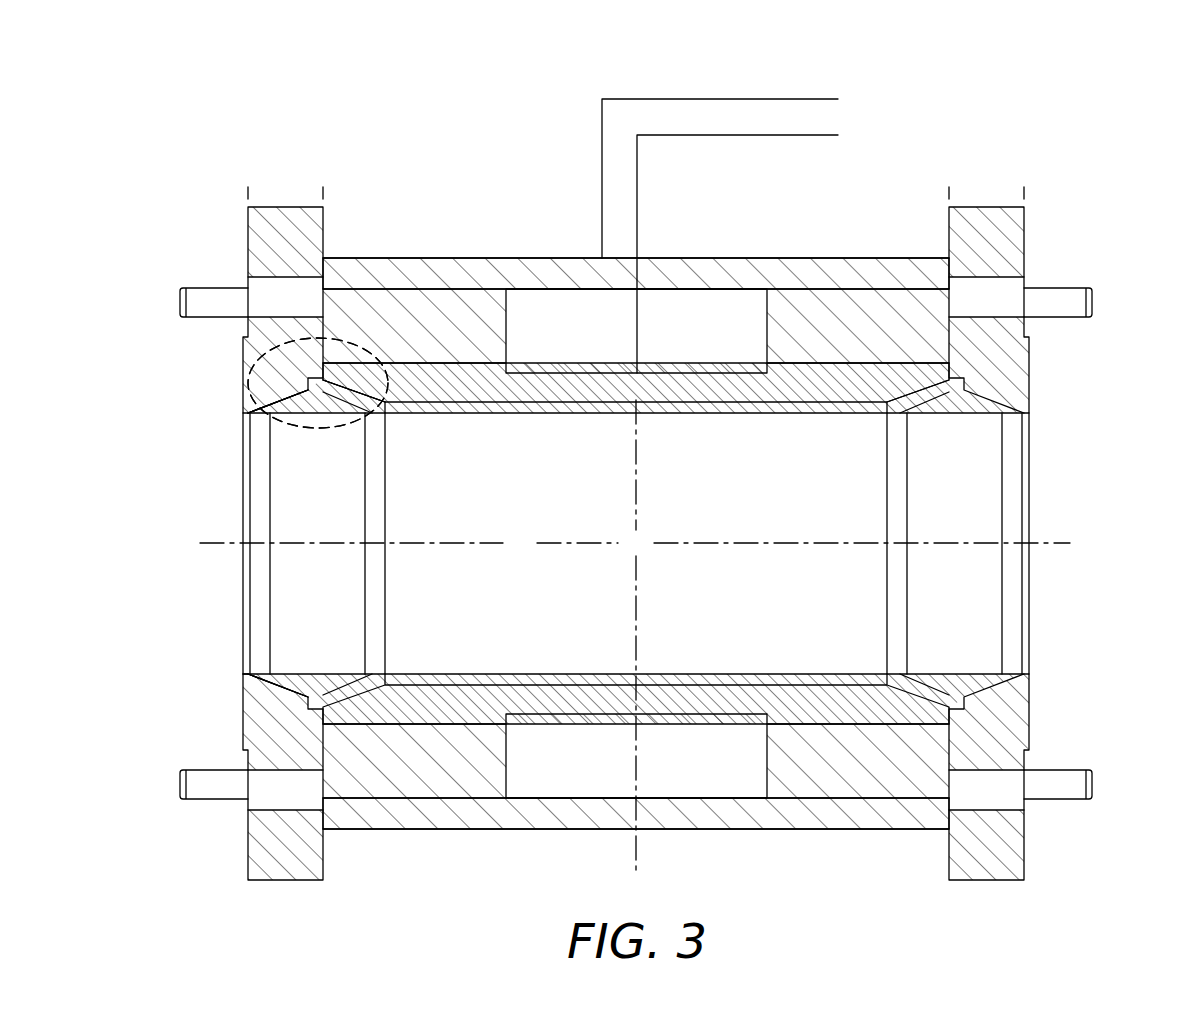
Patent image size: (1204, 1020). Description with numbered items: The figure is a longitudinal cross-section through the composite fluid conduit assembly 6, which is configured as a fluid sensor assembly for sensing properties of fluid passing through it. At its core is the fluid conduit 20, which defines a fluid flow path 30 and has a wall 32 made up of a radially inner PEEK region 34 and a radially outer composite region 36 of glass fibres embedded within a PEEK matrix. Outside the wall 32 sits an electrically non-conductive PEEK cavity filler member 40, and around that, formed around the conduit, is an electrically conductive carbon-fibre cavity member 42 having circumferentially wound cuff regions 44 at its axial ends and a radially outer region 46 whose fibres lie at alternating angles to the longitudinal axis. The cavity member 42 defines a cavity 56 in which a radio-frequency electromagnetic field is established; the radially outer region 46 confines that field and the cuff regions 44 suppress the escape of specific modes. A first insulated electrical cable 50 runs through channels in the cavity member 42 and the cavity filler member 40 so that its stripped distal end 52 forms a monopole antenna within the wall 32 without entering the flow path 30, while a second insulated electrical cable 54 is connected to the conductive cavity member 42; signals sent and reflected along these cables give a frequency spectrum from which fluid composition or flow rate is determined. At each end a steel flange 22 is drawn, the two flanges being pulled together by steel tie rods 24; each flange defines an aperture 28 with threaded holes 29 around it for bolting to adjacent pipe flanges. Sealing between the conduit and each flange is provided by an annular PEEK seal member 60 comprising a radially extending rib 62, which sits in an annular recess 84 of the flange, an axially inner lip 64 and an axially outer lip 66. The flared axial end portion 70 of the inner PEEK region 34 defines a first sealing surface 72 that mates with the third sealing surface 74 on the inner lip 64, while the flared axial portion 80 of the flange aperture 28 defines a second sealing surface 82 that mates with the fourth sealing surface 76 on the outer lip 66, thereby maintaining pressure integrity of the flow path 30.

The fluid conduit assembly 6 is at (203, 906).
The fluid conduit 20 is at (387, 838).
The steel flange 22 is at (290, 206).
The steel tie rod 24 is at (1068, 288).
The aperture 28 is at (250, 515).
The threaded hole 29 is at (1003, 795).
The fluid flow path 30 is at (507, 555).
The wall 32 is at (557, 440).
The radially inner PEEK region 34 is at (480, 414).
The radially outer composite region 36 is at (705, 373).
The cavity filler member 40 is at (560, 770).
The cavity member 42 is at (736, 838).
The cuff region 44 is at (455, 300).
The radially outer region 46 is at (540, 258).
The first insulated electrical cable 50 is at (812, 137).
The distal end 52 is at (1128, 152).
The second insulated electrical cable 54 is at (812, 99).
The cavity 56 is at (623, 555).
The seal member 60 is at (955, 422).
The rib 62 is at (300, 392).
The axially inner lip 64 is at (348, 414).
The axially outer lip 66 is at (297, 414).
The axial end portion 70 is at (907, 397).
The first sealing surface 72 is at (357, 362).
The third sealing surface 74 is at (318, 383).
The fourth sealing surface 76 is at (275, 410).
The flared axial portion 80 is at (262, 681).
The second sealing surface 82 is at (278, 401).
The annular recess 84 is at (354, 391).